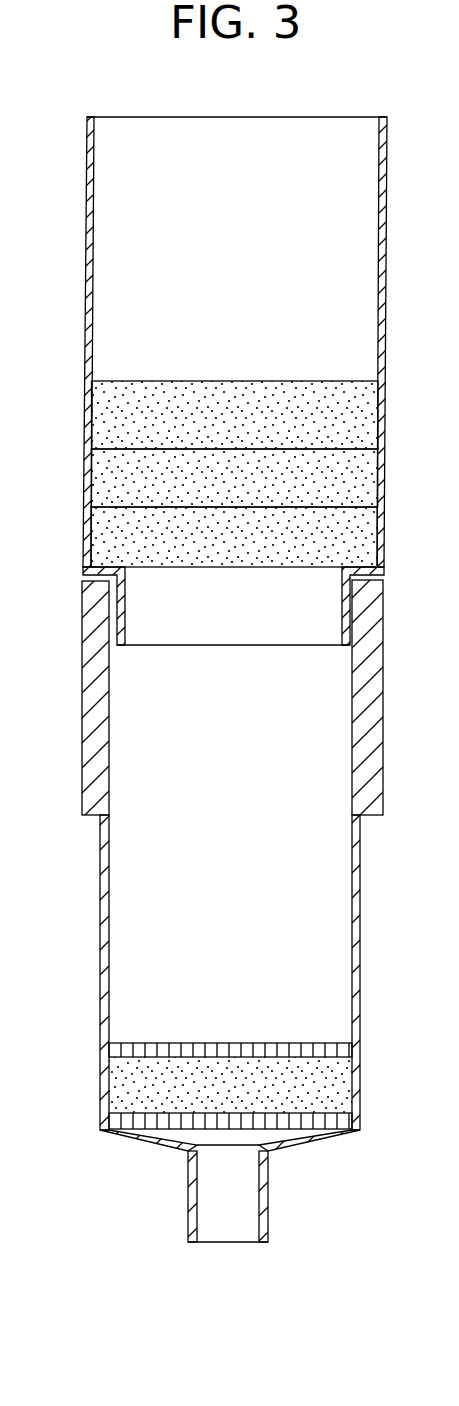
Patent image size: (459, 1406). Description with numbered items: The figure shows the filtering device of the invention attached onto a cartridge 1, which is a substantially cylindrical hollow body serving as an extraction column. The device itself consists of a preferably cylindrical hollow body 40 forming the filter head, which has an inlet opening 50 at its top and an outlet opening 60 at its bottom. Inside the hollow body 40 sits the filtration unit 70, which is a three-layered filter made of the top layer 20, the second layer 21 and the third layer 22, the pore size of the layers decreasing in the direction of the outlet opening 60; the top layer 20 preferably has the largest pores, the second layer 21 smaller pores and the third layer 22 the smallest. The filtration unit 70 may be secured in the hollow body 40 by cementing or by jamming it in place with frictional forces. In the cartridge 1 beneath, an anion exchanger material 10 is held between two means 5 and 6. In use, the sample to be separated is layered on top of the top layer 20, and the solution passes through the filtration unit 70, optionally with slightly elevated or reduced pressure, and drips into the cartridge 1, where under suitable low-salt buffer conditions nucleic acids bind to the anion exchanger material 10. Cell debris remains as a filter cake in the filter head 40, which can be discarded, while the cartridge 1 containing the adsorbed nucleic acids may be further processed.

The cartridge 1 is at (87, 725).
The means 5 is at (123, 1051).
The means 6 is at (123, 1122).
The anion exchanger material 10 is at (123, 1090).
The top layer 20 is at (100, 413).
The second layer 21 is at (100, 480).
The third layer 22 is at (100, 540).
The hollow body 40 is at (88, 172).
The inlet opening 50 is at (218, 133).
The outlet opening 60 is at (138, 610).
The filtration unit 70 is at (237, 475).